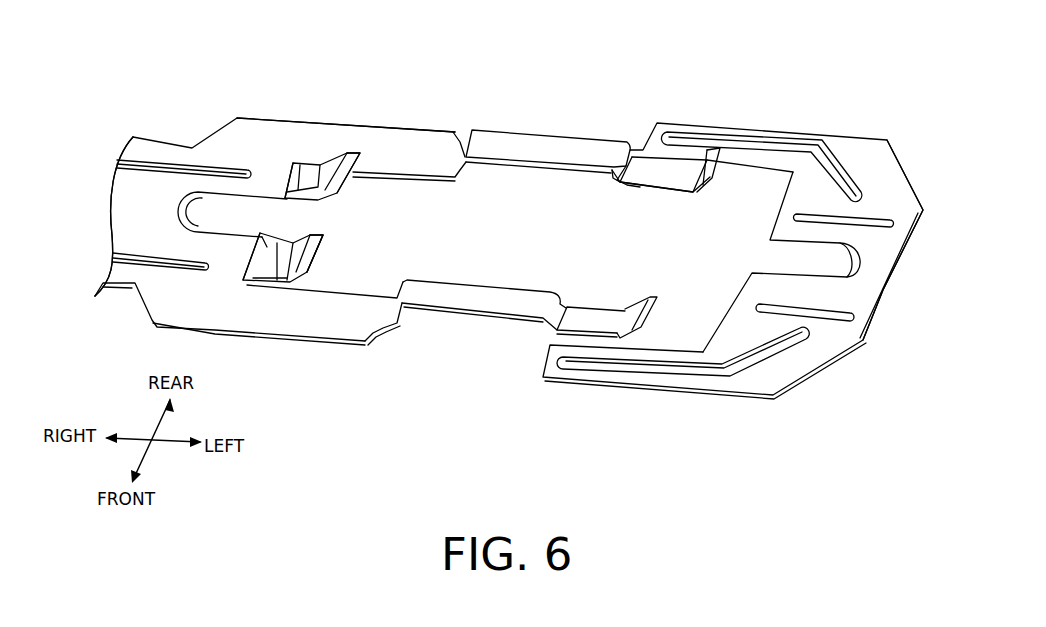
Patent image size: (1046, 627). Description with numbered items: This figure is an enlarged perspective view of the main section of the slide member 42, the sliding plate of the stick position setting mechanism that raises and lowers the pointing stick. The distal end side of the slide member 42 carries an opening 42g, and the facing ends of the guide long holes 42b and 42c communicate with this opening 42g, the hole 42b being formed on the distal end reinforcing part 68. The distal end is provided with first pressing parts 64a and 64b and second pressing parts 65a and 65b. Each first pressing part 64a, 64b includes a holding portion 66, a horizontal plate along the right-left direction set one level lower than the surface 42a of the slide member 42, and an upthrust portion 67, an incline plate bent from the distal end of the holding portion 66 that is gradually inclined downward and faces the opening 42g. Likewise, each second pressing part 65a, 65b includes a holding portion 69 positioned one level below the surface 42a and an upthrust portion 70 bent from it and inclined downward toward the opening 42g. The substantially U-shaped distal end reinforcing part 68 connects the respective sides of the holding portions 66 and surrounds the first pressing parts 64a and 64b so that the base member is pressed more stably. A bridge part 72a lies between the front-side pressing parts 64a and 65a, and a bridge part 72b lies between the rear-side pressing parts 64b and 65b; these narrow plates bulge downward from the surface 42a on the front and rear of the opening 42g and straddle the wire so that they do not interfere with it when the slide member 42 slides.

The slide member 42 is at (186, 52).
The surface of the slide member 42a is at (270, 137).
The guide long hole 42b is at (867, 300).
The guide long hole 42c is at (176, 208).
The opening 42g is at (370, 273).
The first pressing part 64a is at (650, 300).
The first pressing part 64b is at (715, 165).
The second pressing part 65a is at (323, 236).
The second pressing part 65b is at (353, 155).
The holding portion 66 is at (652, 173).
The upthrust portion 67 is at (795, 147).
The distal end reinforcing part 68 is at (883, 310).
The holding portion 69 is at (270, 285).
The upthrust portion 70 is at (303, 283).
The bridge part 72a is at (468, 297).
The bridge part 72b is at (543, 147).